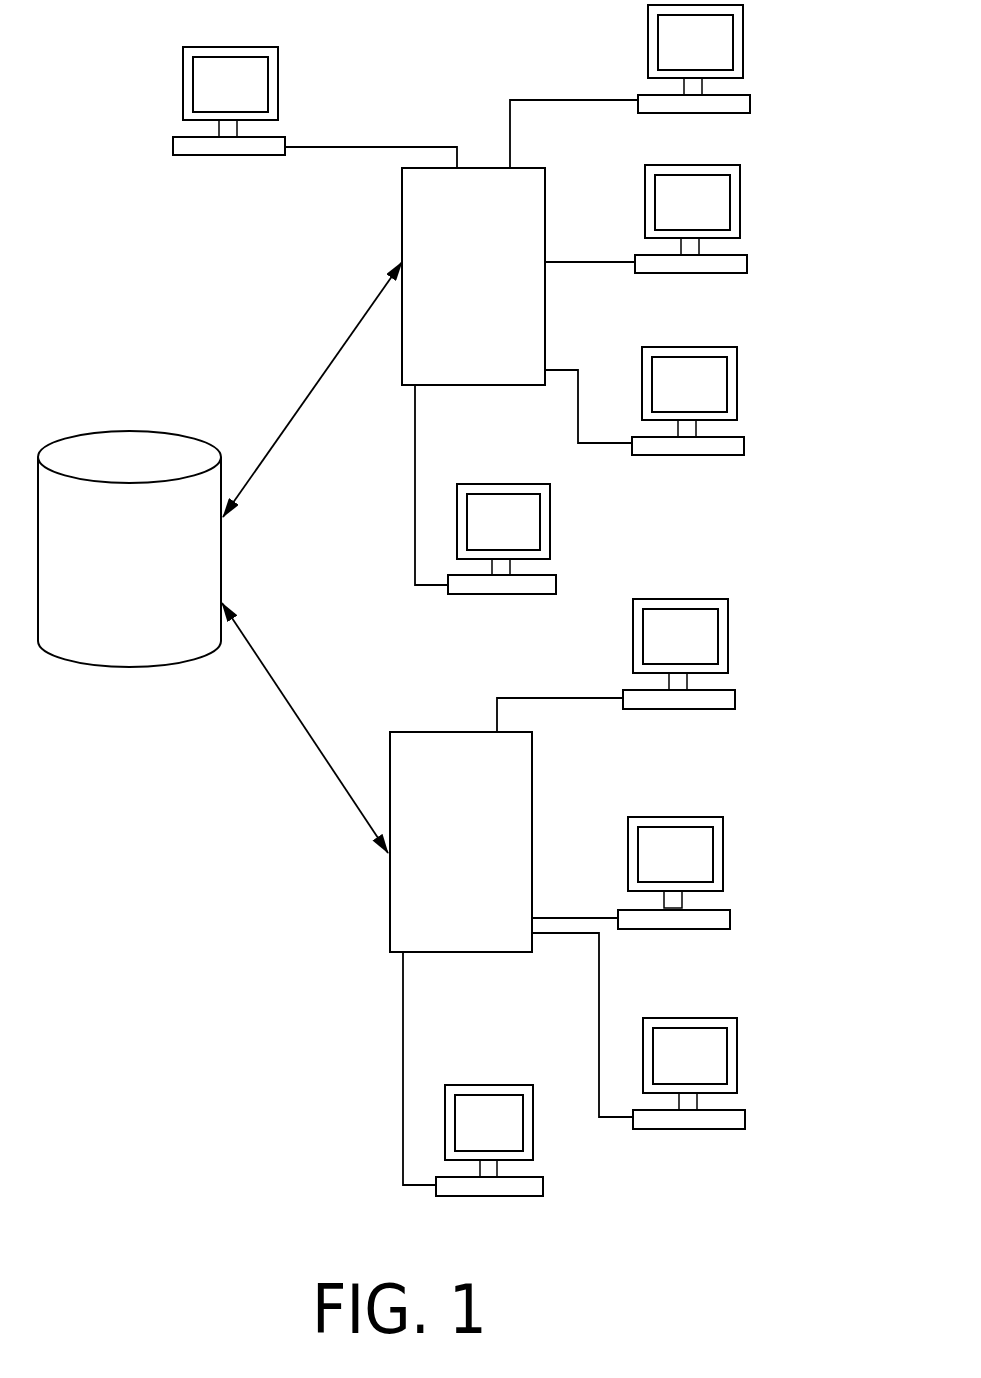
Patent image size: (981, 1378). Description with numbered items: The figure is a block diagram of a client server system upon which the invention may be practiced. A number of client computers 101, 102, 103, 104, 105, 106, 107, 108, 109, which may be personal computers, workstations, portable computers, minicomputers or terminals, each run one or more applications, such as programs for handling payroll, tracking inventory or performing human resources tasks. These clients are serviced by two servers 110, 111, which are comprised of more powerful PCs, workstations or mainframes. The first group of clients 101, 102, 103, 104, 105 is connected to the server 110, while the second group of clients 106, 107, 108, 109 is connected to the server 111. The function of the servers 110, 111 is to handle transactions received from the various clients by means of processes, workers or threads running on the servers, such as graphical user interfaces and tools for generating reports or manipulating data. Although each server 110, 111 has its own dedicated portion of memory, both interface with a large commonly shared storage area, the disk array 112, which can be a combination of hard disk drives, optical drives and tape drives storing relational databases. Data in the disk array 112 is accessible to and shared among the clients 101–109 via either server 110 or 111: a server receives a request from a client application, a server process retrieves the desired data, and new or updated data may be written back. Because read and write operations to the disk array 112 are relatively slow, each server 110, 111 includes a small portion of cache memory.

The client computer 101 is at (278, 85).
The client computer 102 is at (743, 58).
The client computer 103 is at (740, 217).
The client computer 104 is at (737, 387).
The client computer 105 is at (550, 523).
The client computer 106 is at (728, 648).
The client computer 107 is at (723, 868).
The client computer 108 is at (737, 1067).
The client computer 109 is at (533, 1145).
The server 110 is at (494, 354).
The server 111 is at (482, 919).
The disk array 112 is at (151, 634).